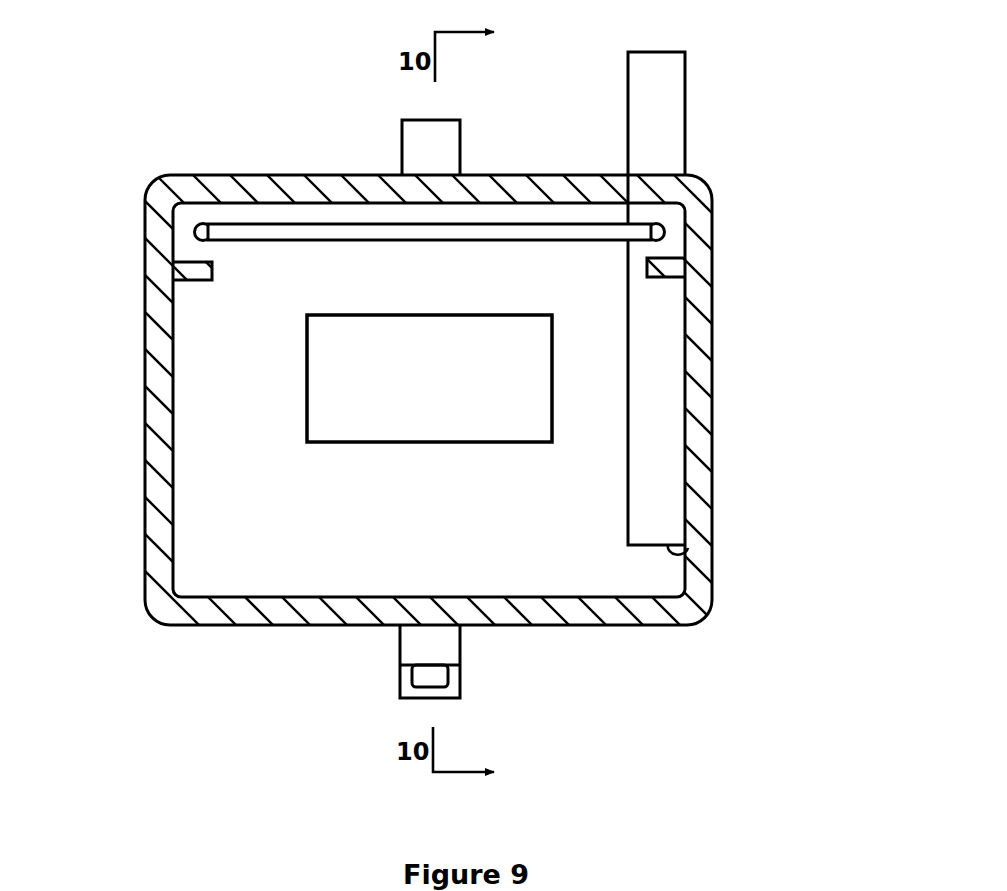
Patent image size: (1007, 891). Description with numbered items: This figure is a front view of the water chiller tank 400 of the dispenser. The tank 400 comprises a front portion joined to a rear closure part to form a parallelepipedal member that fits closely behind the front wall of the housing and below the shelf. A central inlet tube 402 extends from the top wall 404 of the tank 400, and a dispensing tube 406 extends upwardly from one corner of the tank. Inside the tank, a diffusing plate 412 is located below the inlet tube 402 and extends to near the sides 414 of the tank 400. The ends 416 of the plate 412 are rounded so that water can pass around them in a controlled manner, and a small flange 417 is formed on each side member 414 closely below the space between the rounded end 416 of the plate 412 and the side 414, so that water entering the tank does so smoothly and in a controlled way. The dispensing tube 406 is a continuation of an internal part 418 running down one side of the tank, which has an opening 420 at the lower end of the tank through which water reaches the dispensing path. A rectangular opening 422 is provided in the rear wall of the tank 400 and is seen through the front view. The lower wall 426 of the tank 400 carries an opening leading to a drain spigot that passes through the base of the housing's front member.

The water chiller tank 400 is at (268, 562).
The central inlet tube 402 is at (458, 136).
The top wall 404 is at (583, 175).
The dispensing tube 406 is at (680, 97).
The diffusing plate 412 is at (578, 241).
The sides 414 is at (165, 455).
The rounded ends 416 is at (204, 222).
The small flange 417 is at (176, 276).
The internal part 418 is at (672, 355).
The opening 420 is at (706, 546).
The rectangular opening 422 is at (309, 380).
The lower wall 426 is at (583, 610).